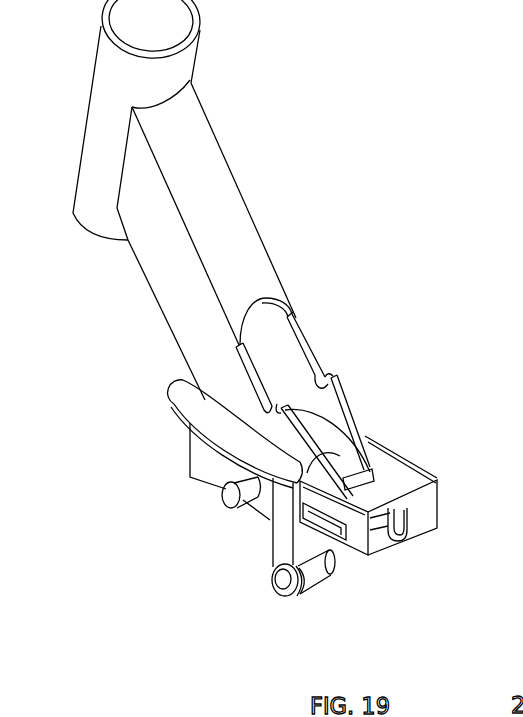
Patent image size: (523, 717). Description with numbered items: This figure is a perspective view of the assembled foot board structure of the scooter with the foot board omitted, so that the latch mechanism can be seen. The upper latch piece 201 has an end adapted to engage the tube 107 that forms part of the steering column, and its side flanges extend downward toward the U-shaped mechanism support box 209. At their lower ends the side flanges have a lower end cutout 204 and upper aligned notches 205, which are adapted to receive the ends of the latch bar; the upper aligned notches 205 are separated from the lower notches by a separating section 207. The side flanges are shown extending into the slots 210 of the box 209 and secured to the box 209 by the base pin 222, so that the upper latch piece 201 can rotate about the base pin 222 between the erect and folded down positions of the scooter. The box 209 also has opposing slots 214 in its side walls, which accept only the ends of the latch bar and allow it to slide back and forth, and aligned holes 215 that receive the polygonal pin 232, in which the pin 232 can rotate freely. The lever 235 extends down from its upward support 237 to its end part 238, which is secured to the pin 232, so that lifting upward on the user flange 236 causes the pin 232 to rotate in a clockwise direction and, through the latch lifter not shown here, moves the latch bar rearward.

The tube 107 is at (195, 57).
The upper latch piece 201 is at (217, 177).
The lower end cutout 204 is at (259, 303).
The upper aligned notches 205 is at (278, 403).
The separating section 207 is at (351, 398).
The U-shaped mechanism support box 209 is at (403, 453).
The slots 210 is at (358, 492).
The slots 214 is at (341, 534).
The aligned holes 215 is at (326, 573).
The base pin 222 is at (223, 498).
The polygonal pin 232 is at (478, 599).
The lever 235 is at (176, 412).
The user flange 236 is at (171, 389).
The upward support 237 is at (271, 534).
The end part 238 is at (303, 599).